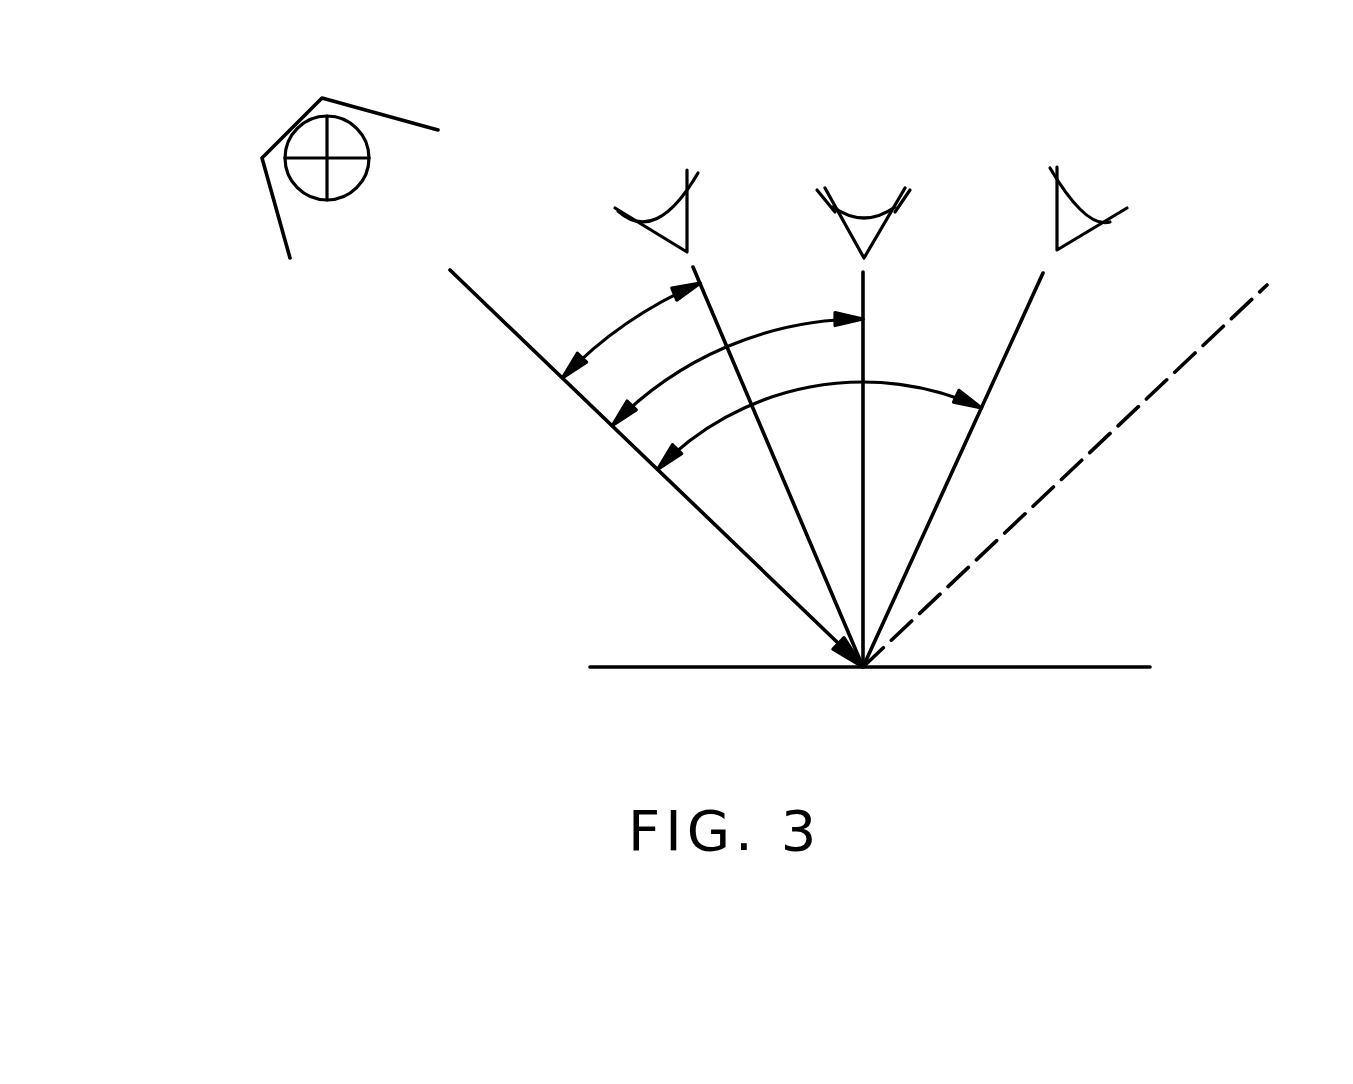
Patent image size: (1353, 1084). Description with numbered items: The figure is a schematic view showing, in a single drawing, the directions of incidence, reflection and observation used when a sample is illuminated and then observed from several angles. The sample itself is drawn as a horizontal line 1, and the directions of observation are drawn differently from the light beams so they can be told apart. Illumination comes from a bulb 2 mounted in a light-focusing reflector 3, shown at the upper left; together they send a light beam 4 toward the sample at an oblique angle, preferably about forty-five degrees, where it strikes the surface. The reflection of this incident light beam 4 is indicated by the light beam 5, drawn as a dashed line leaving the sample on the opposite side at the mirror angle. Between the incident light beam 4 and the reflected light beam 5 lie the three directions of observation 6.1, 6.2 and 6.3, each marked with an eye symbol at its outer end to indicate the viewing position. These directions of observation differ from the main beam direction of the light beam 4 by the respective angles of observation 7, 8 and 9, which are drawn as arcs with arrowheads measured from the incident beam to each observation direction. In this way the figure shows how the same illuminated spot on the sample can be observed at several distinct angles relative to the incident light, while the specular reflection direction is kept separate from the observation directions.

The surface 1 is at (1053, 668).
The bulb 2 is at (300, 188).
The light-focusing reflector 3 is at (285, 247).
The light beam 4 is at (563, 380).
The light beam 5 is at (1155, 392).
The direction of observation 6.1 is at (737, 414).
The direction of observation 6.2 is at (863, 409).
The direction of observation 6.3 is at (998, 413).
The angle of observation 7 is at (623, 322).
The angle of observation 8 is at (778, 330).
The angle of observation 9 is at (933, 388).